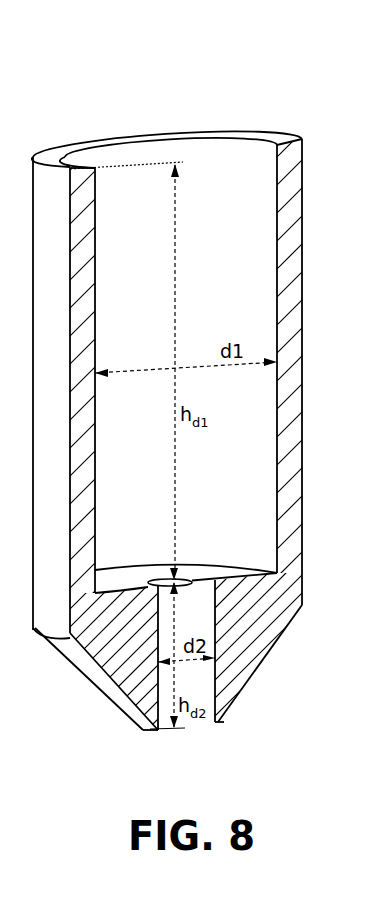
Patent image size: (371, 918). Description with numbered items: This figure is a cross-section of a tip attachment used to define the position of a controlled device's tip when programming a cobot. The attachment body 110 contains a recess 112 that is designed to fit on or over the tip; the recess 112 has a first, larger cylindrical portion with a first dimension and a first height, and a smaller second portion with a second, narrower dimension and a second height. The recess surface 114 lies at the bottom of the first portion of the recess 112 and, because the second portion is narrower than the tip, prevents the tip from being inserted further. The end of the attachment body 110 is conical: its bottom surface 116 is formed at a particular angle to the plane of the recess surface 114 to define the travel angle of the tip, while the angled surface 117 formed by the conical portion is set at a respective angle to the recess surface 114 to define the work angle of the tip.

The attachment body 110 is at (135, 635).
The recess 112 is at (233, 305).
The recess surface 114 is at (140, 578).
The bottom surface 116 is at (219, 723).
The angled surface 117 is at (103, 692).